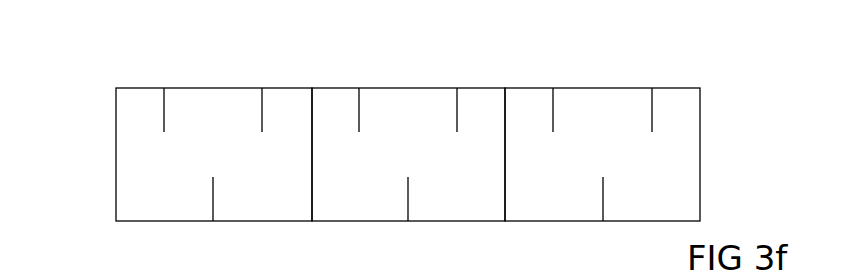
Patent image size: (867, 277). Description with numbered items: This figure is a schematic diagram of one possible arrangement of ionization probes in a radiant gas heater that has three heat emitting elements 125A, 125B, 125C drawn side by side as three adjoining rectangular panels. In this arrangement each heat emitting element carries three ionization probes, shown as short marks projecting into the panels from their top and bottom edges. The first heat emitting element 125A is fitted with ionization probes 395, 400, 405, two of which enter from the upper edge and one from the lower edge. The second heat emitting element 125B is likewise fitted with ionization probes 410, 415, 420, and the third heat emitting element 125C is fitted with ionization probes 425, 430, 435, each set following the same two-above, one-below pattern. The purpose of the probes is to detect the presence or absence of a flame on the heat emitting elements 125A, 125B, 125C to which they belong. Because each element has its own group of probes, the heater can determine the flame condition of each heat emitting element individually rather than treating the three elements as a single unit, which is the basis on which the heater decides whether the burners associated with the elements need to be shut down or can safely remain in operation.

The heat emitting element 125A is at (218, 88).
The heat emitting element 125B is at (415, 88).
The heat emitting element 125C is at (603, 88).
The ionization probe 395 is at (163, 118).
The ionization probe 400 is at (263, 108).
The ionization probe 405 is at (212, 200).
The ionization probe 410 is at (360, 112).
The ionization probe 415 is at (457, 110).
The ionization probe 420 is at (407, 205).
The ionization probe 425 is at (554, 108).
The ionization probe 430 is at (652, 108).
The ionization probe 435 is at (602, 204).